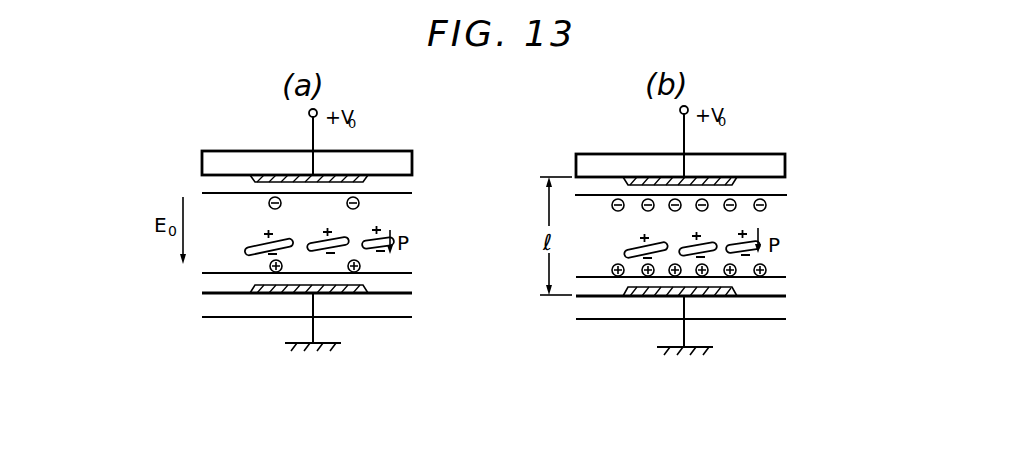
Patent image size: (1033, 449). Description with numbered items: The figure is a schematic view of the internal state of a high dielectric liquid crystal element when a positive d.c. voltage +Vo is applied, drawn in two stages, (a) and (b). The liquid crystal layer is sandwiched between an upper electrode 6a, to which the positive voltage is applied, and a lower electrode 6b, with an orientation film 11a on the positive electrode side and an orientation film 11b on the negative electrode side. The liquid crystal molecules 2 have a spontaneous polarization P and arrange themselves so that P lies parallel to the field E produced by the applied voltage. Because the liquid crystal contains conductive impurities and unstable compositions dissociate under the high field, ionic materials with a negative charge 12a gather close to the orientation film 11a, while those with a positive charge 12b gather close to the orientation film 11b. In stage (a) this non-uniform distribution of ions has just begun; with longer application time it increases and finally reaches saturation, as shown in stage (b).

The liquid crystal molecules 2 is at (255, 250).
The electrode 6a is at (262, 175).
The electrode 6b is at (258, 293).
The orientation film 11a is at (410, 187).
The orientation film 11b is at (412, 286).
The negative charge ionic materials 12a is at (359, 204).
The positive charge ionic materials 12b is at (360, 265).